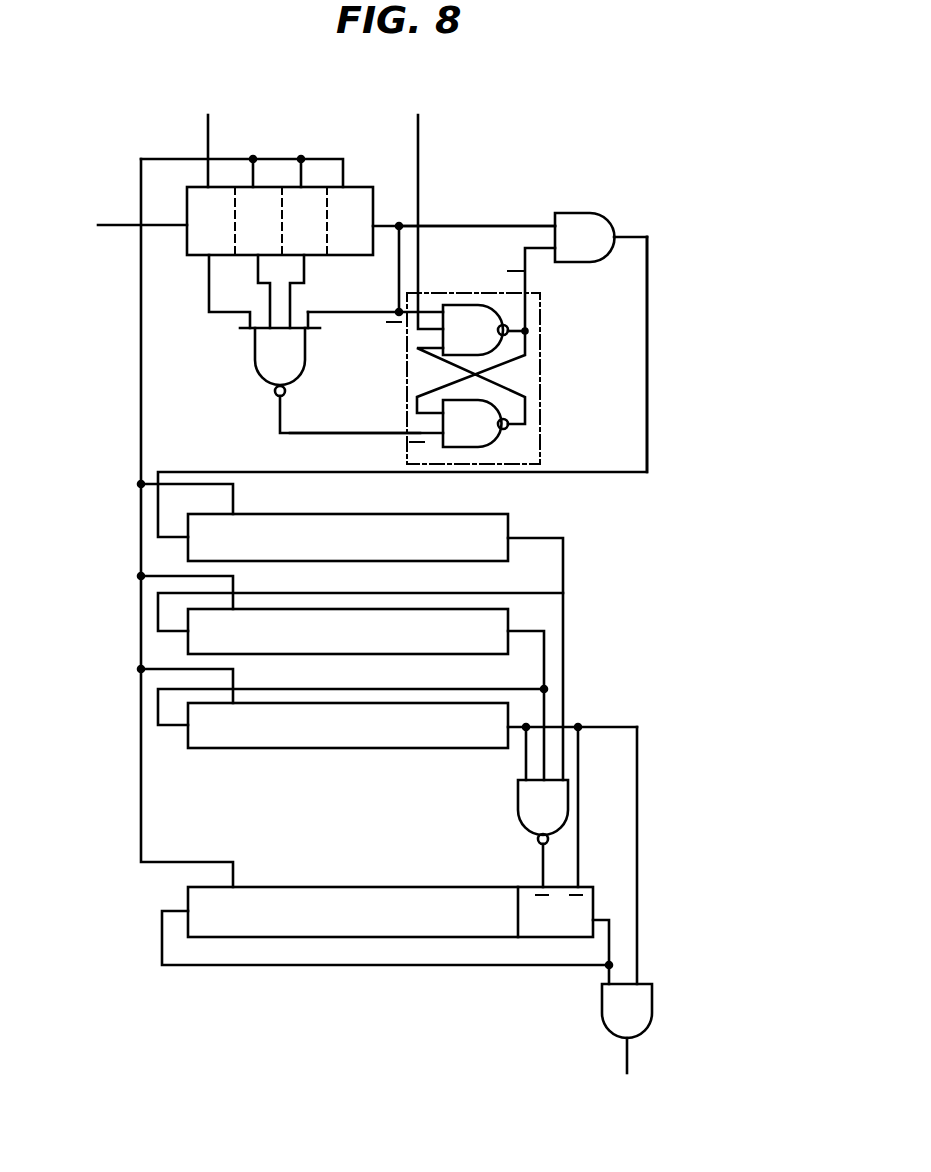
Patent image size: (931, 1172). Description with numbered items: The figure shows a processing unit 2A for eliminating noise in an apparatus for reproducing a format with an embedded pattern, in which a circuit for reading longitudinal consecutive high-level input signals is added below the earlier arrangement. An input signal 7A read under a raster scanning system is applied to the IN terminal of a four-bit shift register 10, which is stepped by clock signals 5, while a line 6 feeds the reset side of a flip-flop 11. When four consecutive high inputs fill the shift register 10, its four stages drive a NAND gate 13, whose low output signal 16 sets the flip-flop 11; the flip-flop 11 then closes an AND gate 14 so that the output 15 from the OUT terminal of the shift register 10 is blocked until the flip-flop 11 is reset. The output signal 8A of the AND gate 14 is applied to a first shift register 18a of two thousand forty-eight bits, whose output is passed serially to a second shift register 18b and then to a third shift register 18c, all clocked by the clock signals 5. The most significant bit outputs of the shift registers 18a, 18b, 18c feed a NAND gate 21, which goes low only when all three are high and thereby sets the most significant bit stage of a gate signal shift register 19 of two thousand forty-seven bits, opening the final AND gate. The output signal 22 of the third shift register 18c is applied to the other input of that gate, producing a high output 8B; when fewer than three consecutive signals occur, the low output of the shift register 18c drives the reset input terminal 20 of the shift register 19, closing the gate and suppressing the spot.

The clock signals 5 is at (207, 138).
The reset input line 6 is at (426, 209).
The input signal 7A is at (126, 225).
The 4-bit shift register 10 is at (370, 187).
The flip-flop 11 is at (540, 372).
The NAND gate 13 is at (268, 370).
The AND gate 14 is at (590, 214).
The output of shift register 15 is at (470, 226).
The output signal of NAND gate 16 is at (322, 432).
The output signal of AND gate 8A is at (647, 296).
The first 2048-bit shift register 18a is at (480, 514).
The second 2048-bit shift register 18b is at (480, 609).
The third 2048-bit shift register 18c is at (475, 703).
The 2047-bit gate signal shift register 19 is at (452, 887).
The reset input terminal 20 is at (593, 895).
The NAND gate 21 is at (568, 810).
The output signal 22 is at (610, 727).
The processing unit 2A is at (652, 1011).
The output 8B is at (628, 1062).